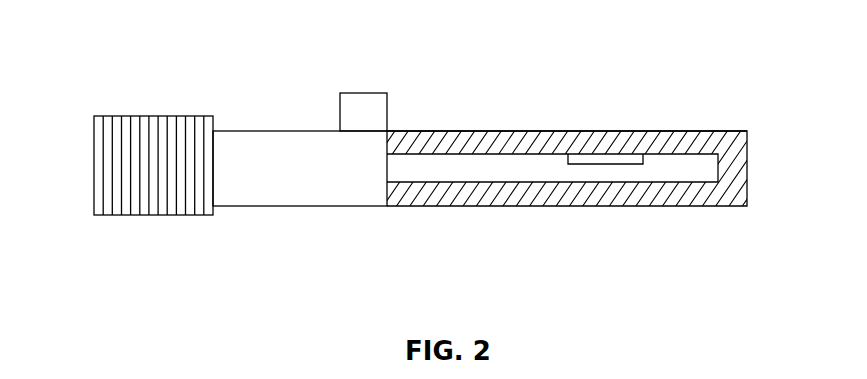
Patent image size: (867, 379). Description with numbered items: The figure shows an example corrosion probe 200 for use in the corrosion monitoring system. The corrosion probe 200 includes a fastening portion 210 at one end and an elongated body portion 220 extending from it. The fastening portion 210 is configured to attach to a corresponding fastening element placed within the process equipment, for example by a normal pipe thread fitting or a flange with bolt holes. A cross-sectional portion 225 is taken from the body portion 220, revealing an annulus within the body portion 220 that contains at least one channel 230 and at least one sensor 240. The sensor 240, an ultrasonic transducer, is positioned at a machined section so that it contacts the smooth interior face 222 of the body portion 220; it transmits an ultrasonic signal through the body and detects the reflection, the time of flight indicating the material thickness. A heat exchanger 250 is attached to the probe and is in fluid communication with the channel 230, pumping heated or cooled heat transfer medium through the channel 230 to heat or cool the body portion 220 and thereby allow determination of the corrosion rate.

The corrosion probe 200 is at (338, 282).
The fastening portion 210 is at (176, 126).
The body portion 220 is at (302, 143).
The interior face 222 is at (553, 153).
The cross-sectional portion 225 is at (690, 132).
The channel 230 is at (463, 174).
The sensor 240 is at (605, 144).
The heat exchanger 250 is at (372, 91).